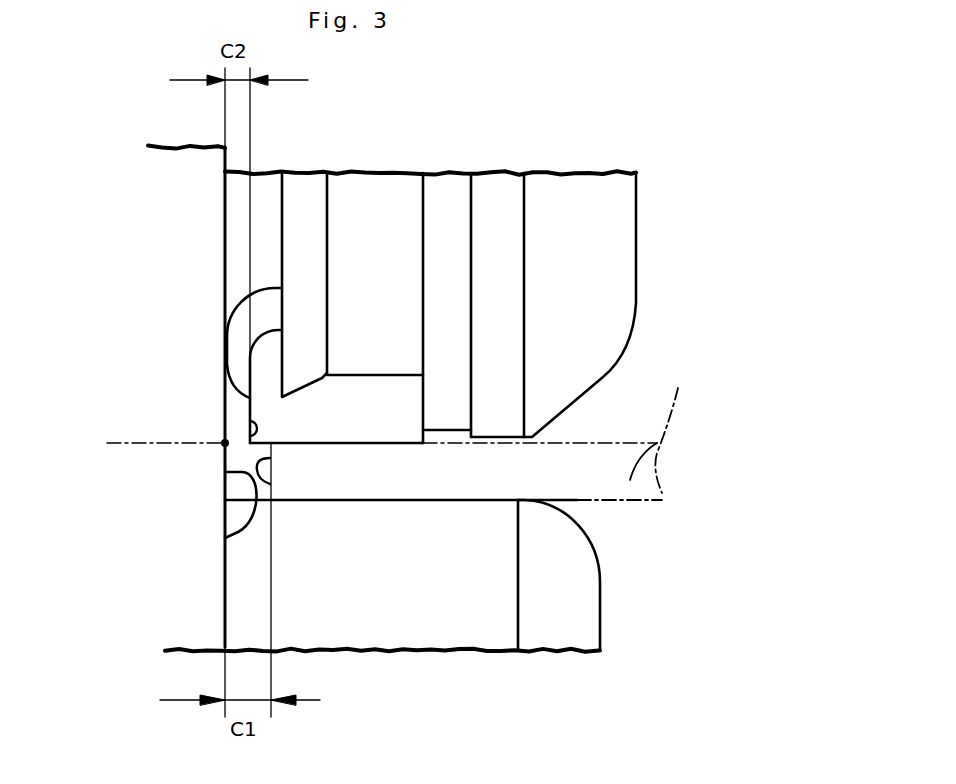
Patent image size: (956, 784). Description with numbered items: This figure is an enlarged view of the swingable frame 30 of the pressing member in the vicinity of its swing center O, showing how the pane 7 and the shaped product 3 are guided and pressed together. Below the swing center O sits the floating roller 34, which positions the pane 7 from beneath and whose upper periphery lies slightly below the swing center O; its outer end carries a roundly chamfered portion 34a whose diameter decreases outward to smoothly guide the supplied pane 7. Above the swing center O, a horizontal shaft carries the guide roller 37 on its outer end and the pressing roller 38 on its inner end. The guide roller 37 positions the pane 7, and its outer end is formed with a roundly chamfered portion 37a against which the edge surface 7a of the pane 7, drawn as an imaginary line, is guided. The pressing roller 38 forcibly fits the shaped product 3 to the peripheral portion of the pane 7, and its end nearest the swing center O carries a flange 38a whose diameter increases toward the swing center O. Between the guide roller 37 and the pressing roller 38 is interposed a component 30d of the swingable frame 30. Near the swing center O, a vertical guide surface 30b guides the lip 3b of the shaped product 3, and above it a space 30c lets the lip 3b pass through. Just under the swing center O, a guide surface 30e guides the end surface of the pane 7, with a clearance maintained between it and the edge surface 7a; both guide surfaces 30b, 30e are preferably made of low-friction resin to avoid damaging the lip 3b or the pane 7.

The swingable frame 30 is at (110, 285).
The shaped product 3 is at (364, 417).
The pressing roller 38 is at (387, 200).
The flange 38a is at (305, 202).
The component 30d is at (447, 197).
The guide roller 37 is at (498, 196).
The roundly chamfered portion 37a is at (584, 192).
The space 30c is at (265, 307).
The lip 3b is at (265, 355).
The vertical guide surface 30b is at (250, 420).
The guide surface 30e is at (225, 538).
The swing center O is at (220, 446).
The pane 7 is at (396, 432).
The edge surface 7a is at (270, 484).
The floating roller 34 is at (447, 633).
The roundly chamfered portion 34a is at (547, 635).